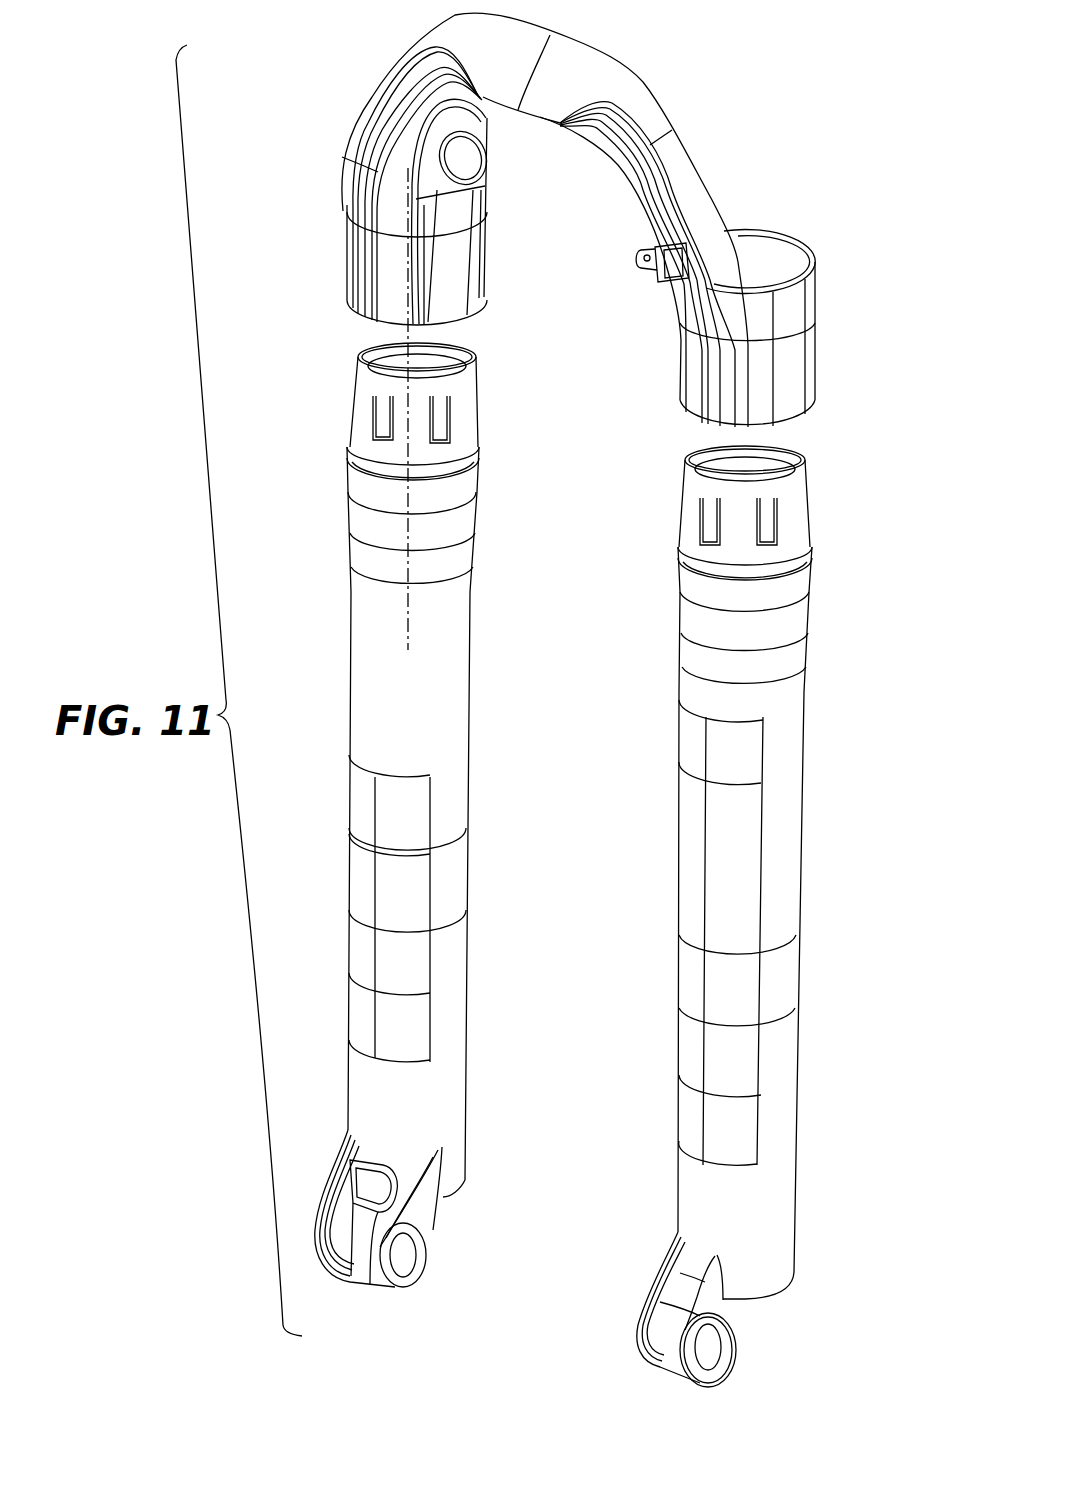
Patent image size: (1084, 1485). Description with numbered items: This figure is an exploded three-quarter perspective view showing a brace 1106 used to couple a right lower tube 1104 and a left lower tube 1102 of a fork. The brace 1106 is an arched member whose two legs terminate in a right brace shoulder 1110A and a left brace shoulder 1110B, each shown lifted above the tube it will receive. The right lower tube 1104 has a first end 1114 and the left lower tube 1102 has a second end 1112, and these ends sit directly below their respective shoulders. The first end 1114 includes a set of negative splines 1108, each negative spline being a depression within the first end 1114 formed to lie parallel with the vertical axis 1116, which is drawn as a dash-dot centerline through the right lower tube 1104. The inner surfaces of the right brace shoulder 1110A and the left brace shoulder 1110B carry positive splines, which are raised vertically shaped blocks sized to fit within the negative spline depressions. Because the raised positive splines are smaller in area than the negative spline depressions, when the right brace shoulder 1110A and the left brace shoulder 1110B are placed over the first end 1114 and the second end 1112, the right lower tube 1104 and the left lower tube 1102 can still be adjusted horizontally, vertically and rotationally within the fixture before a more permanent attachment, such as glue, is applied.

The left lower tube 1102 is at (792, 1080).
The right lower tube 1104 is at (358, 732).
The brace 1106 is at (620, 57).
The set of negative splines 1108 is at (380, 408).
The right brace shoulder 1110A is at (334, 106).
The left brace shoulder 1110B is at (829, 222).
The second end 1112 is at (667, 463).
The first end 1114 is at (338, 357).
The vertical axis 1116 is at (405, 326).